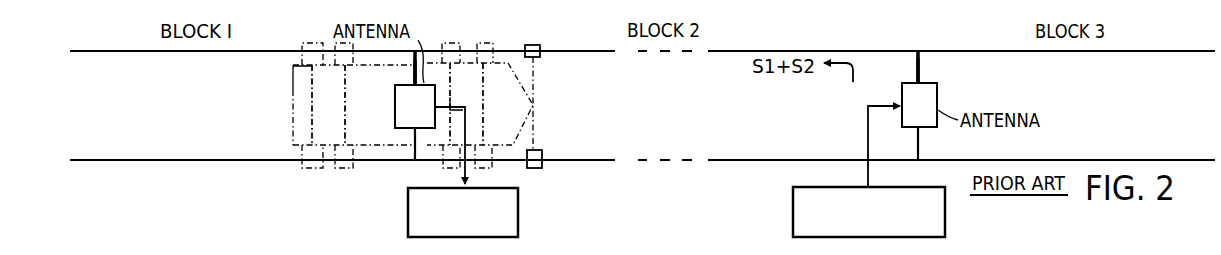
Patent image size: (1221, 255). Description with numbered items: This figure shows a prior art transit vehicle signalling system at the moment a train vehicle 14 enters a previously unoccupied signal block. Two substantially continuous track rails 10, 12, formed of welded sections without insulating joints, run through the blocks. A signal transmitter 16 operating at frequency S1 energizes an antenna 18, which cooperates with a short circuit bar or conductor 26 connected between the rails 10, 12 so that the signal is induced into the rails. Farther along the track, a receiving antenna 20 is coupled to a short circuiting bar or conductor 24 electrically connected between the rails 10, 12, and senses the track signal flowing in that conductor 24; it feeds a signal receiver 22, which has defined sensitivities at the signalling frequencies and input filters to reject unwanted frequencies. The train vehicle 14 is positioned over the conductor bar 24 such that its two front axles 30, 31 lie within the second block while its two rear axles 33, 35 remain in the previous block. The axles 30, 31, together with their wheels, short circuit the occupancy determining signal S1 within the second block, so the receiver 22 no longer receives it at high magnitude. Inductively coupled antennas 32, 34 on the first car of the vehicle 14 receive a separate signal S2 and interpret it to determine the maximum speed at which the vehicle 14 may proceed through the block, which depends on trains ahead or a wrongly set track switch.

The track rail 10 is at (600, 53).
The track rail 12 is at (602, 158).
The transit vehicle 14 is at (374, 118).
The signal transmitter 16 is at (793, 190).
The antenna 18 is at (937, 103).
The receiving antenna 20 is at (395, 119).
The signal receiver 22 is at (410, 190).
The short circuiting bar 24 is at (412, 72).
The short circuit bar 26 is at (918, 67).
The front axle 30 is at (487, 100).
The front axle 31 is at (452, 96).
The inductively coupled antenna 32 is at (540, 46).
The rear axle 33 is at (343, 102).
The inductively coupled antenna 34 is at (535, 168).
The rear axle 35 is at (296, 88).